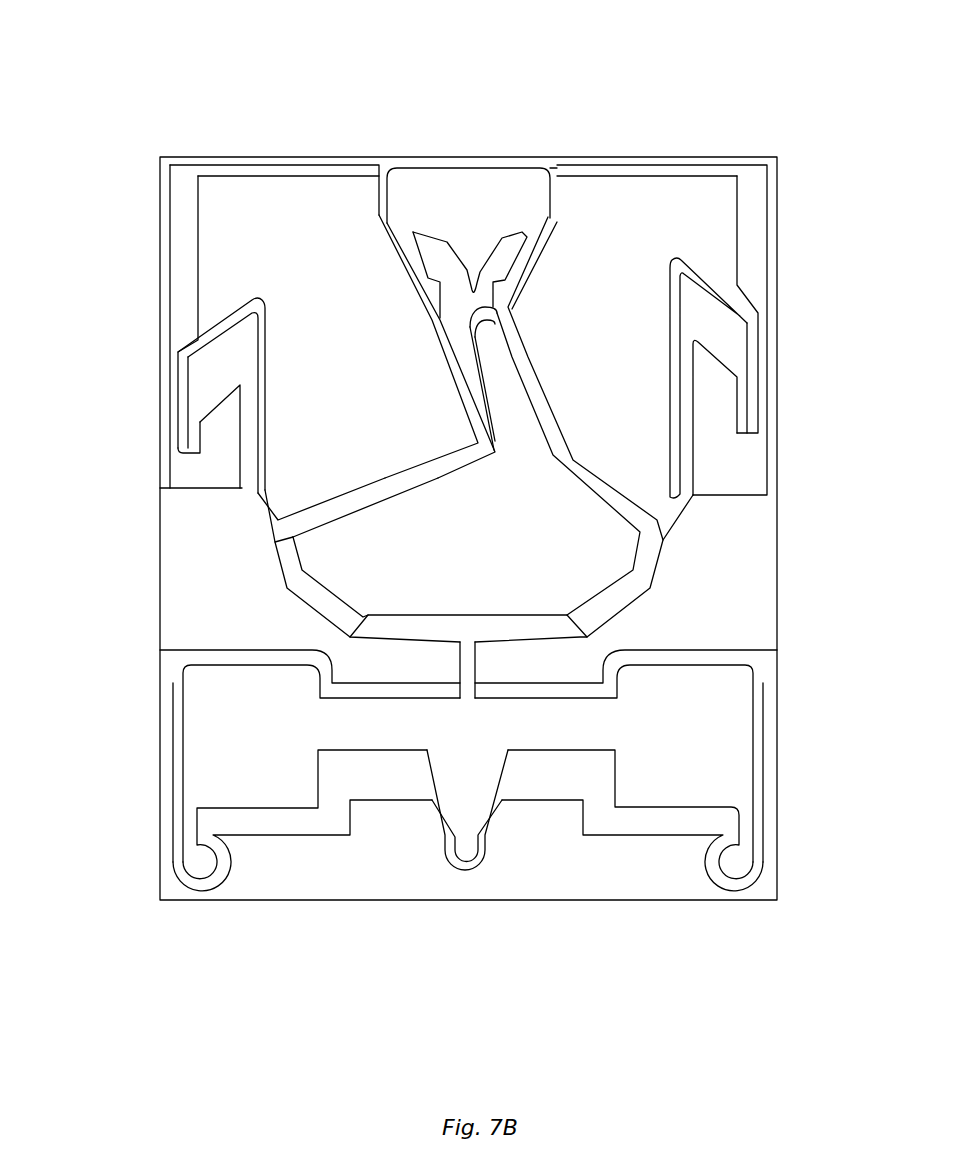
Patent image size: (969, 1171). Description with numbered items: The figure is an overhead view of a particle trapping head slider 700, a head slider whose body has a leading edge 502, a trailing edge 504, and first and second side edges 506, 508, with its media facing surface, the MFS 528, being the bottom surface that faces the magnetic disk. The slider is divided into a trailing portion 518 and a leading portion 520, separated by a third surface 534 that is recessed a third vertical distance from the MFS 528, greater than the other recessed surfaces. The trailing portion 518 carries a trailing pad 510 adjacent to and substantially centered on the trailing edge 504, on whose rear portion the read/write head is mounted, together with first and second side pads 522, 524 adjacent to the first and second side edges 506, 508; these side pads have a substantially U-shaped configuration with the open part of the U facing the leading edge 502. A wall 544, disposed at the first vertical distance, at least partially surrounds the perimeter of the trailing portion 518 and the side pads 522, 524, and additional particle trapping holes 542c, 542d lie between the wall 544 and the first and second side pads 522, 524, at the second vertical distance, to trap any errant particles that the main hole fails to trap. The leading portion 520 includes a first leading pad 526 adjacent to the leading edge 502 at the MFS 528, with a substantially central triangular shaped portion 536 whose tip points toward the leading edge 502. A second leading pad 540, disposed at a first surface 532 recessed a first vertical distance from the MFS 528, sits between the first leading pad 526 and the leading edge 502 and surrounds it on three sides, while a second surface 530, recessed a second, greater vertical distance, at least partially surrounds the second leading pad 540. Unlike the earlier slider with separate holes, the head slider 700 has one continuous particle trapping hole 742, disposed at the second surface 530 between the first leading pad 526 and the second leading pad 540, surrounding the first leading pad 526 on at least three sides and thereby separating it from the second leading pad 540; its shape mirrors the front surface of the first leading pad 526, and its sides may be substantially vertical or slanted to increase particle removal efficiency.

The head slider 700 is at (170, 32).
The leading edge 502 is at (468, 938).
The trailing edge 504 is at (465, 86).
The first side edge 506 is at (126, 599).
The second side edge 508 is at (811, 599).
The trailing pad 510 is at (508, 190).
The trailing portion 518 is at (849, 153).
The leading portion 520 is at (849, 648).
The first side pad 522 is at (240, 342).
The second side pad 524 is at (697, 300).
The first leading pad 526 is at (248, 683).
The media facing surface (MFS) 528 is at (430, 190).
The second surface 530 is at (297, 210).
The first surface 532 is at (185, 190).
The third surface 534 is at (470, 536).
The triangular shaped portion 536 is at (466, 852).
The second leading pad 540 is at (248, 868).
The additional particle trapping hole 542c is at (740, 304).
The additional particle trapping hole 542d is at (196, 338).
The wall 544 is at (752, 190).
The continuous particle trapping hole 742 is at (397, 780).